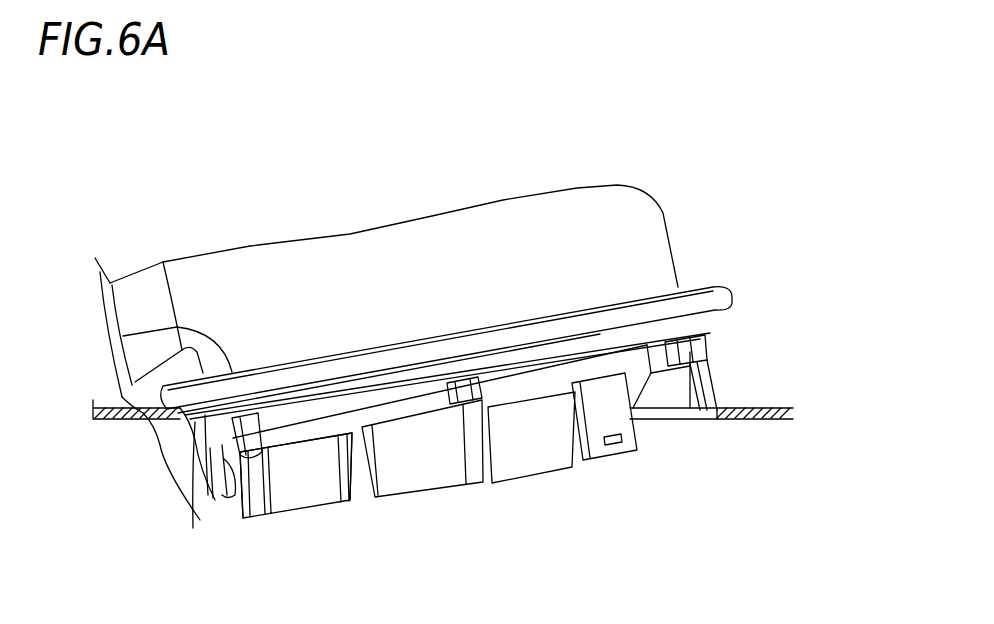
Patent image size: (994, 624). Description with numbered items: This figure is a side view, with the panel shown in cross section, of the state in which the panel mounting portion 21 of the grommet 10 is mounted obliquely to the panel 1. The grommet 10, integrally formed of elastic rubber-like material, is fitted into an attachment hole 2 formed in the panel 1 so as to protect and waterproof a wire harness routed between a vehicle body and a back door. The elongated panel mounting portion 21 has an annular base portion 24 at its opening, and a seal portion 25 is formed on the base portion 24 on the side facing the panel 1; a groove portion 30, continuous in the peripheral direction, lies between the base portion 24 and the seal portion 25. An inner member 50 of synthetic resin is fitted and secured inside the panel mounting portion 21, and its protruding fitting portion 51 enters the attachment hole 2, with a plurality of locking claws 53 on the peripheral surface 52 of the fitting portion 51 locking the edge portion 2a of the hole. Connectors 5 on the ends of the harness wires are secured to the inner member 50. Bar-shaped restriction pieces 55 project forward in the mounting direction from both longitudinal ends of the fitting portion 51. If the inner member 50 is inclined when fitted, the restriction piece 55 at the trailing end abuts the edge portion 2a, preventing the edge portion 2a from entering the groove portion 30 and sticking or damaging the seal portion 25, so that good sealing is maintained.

The panel 1 is at (773, 405).
The attachment hole 2 is at (657, 419).
The edge portion 2a is at (185, 432).
The connectors 5 is at (303, 498).
The grommet 10 is at (183, 220).
The panel mounting portion 21 is at (432, 215).
The base portion 24 is at (140, 412).
The seal portion 25 is at (205, 432).
The groove portion 30 is at (262, 385).
The inner member 50 is at (385, 420).
The fitting portion 51 is at (662, 364).
The peripheral surface 52 is at (533, 373).
The locking claws 53 is at (258, 428).
The restriction pieces 55 is at (712, 366).